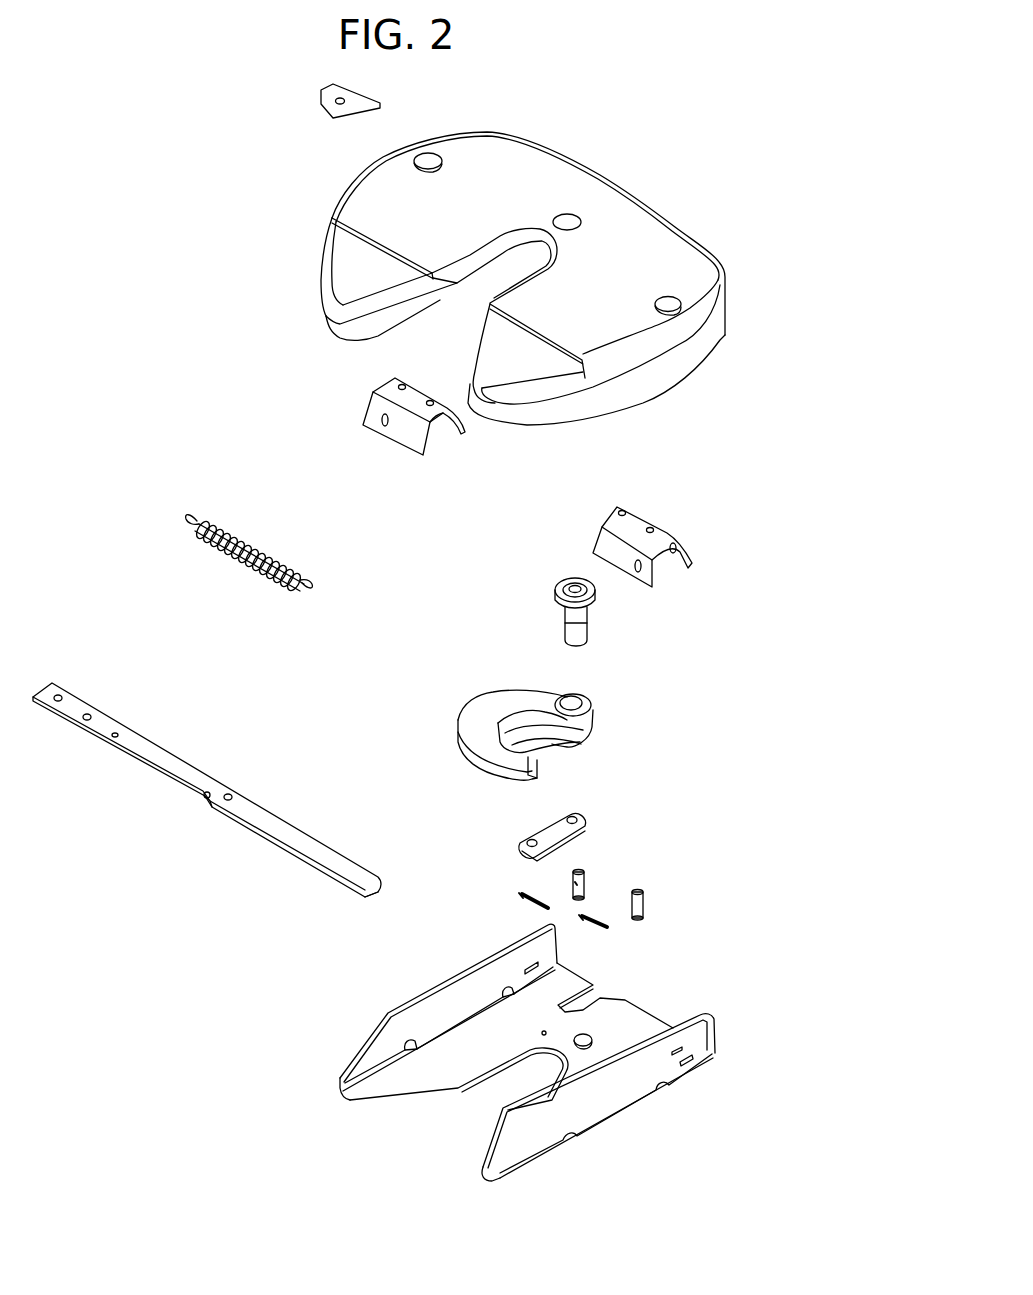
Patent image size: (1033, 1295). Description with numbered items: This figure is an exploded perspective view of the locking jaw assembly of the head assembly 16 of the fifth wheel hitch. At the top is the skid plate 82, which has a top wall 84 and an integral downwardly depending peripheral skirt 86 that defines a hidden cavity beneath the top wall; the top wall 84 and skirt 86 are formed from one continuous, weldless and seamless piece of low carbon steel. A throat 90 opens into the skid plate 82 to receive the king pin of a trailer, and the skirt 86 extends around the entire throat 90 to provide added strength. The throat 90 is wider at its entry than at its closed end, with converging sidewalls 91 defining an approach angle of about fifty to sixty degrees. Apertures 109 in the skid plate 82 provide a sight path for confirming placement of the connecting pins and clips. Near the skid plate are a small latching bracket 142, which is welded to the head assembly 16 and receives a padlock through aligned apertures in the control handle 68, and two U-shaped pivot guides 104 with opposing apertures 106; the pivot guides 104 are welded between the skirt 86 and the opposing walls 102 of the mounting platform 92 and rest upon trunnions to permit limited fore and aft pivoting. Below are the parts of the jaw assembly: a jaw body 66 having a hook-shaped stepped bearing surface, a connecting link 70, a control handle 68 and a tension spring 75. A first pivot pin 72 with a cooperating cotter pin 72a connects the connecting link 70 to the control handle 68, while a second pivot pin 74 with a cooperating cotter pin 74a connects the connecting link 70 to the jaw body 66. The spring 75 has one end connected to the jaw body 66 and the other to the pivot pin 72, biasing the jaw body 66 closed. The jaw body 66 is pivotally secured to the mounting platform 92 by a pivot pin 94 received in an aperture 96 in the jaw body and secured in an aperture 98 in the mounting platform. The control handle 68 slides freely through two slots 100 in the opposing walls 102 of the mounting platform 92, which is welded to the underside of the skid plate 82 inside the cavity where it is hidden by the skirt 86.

The head assembly 16 is at (189, 157).
The latching bracket 142 is at (322, 94).
The skid plate 82 is at (532, 254).
The top wall 84 is at (598, 203).
The apertures 109 is at (430, 153).
The throat 90 is at (493, 256).
The converging sidewalls 91 is at (403, 312).
The peripheral skirt 86 is at (650, 382).
The pivot guides 104 is at (381, 430).
The apertures 106 is at (380, 428).
The pivot pin 94 is at (556, 595).
The tension spring 75 is at (249, 550).
The control handle 68 is at (165, 760).
The jaw body 66 is at (534, 728).
The aperture 96 is at (580, 705).
The connecting link 70 is at (552, 832).
The second pivot pin 74 is at (586, 880).
The cotter pin 74a is at (524, 902).
The first pivot pin 72 is at (643, 903).
The cotter pin 72a is at (598, 922).
The mounting platform 92 is at (557, 1042).
The aperture 98 is at (586, 1032).
The slots 100 is at (528, 970).
The opposing walls 102 is at (448, 1001).